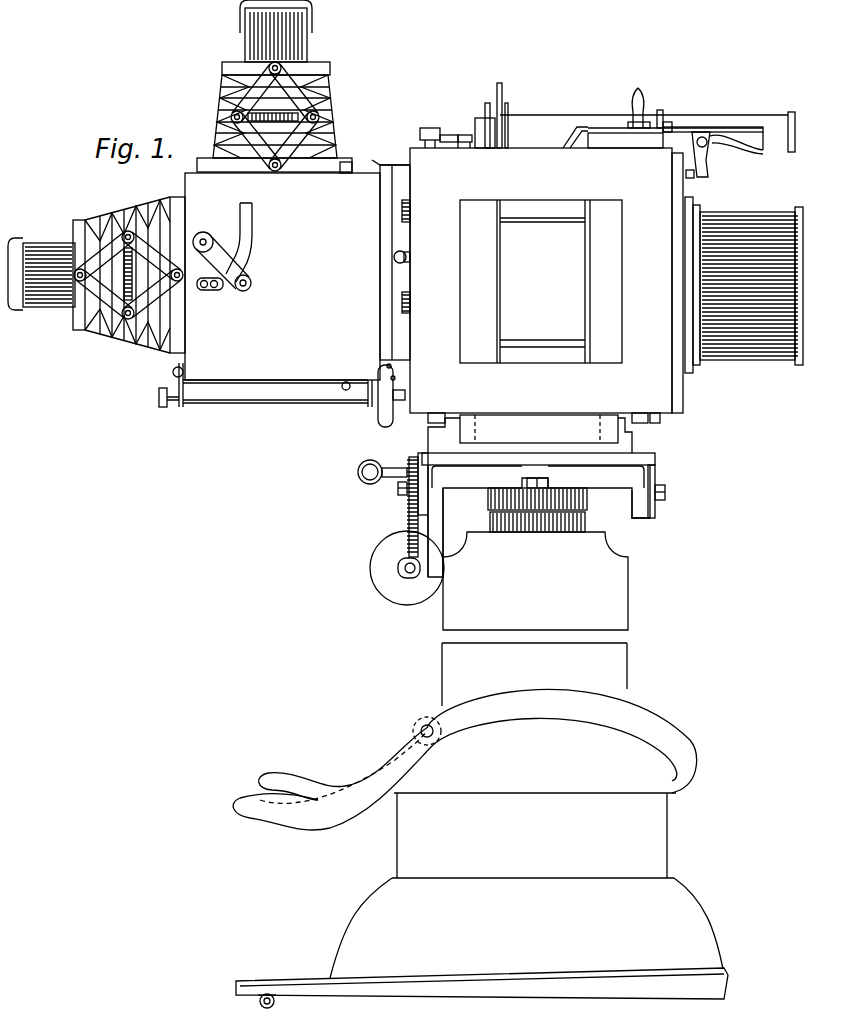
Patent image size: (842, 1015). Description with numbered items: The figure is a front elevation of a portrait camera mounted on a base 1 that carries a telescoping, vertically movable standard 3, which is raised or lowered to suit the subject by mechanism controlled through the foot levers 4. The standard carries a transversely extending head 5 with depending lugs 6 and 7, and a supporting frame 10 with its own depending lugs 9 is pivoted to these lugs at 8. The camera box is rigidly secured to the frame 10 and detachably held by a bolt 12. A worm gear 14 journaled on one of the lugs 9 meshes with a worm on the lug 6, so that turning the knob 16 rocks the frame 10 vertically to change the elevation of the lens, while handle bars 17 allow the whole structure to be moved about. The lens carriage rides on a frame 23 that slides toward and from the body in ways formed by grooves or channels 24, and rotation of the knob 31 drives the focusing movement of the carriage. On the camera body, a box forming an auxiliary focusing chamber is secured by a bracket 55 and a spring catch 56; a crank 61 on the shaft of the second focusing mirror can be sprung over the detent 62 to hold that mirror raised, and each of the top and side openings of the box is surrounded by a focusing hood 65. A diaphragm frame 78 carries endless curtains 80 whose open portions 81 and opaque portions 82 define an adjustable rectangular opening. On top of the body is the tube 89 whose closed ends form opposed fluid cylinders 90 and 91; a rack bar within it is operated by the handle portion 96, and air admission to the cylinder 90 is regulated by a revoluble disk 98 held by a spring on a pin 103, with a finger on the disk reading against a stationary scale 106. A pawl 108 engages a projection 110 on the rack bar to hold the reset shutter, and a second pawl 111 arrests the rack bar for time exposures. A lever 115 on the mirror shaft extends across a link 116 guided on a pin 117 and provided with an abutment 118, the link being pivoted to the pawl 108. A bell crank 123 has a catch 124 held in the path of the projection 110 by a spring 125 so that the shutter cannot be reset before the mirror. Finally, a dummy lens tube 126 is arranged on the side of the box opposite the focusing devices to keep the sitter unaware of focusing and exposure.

The base 1 is at (482, 770).
The standard 3 is at (537, 510).
The foot levers 4 is at (284, 772).
The head 5 is at (465, 482).
The depending lug 6 is at (437, 572).
The depending lug 7 is at (638, 512).
The pivot 8 is at (665, 492).
The depending lugs 9 is at (652, 478).
The supporting frame 10 is at (625, 461).
The bolt 12 is at (549, 484).
The worm gear 14 is at (418, 524).
The knob 16 is at (375, 557).
The handle bars 17 is at (358, 471).
The carriage frame 23 is at (539, 429).
The grooves or channels 24 is at (452, 429).
The knob 31 is at (384, 420).
The bracket 55 is at (383, 380).
The spring catch 56 is at (400, 163).
The crank 61 is at (251, 285).
The detent 62 is at (252, 242).
The focusing hood 65 is at (184, 180).
The housing 78 is at (546, 285).
The endless curtain 80 is at (501, 326).
The open portions 81 is at (542, 270).
The opaque portions 82 is at (523, 349).
The tube 89 is at (672, 122).
The fluid cylinder 90 is at (530, 118).
The fluid cylinder 91 is at (790, 120).
The handle portion 96 is at (636, 102).
The revoluble disk 98 is at (488, 112).
The pin 103 is at (478, 124).
The scale 106 is at (503, 90).
The pawl 108 is at (625, 142).
The projection 110 is at (660, 112).
The second pawl 111 is at (690, 130).
The lever 115 is at (467, 144).
The link 116 is at (570, 140).
The pin 117 is at (455, 144).
The abutment 118 is at (435, 148).
The bell crank 123 is at (712, 150).
The catch 124 is at (755, 151).
The spring 125 is at (688, 176).
The dummy lens or lens tube 126 is at (744, 285).